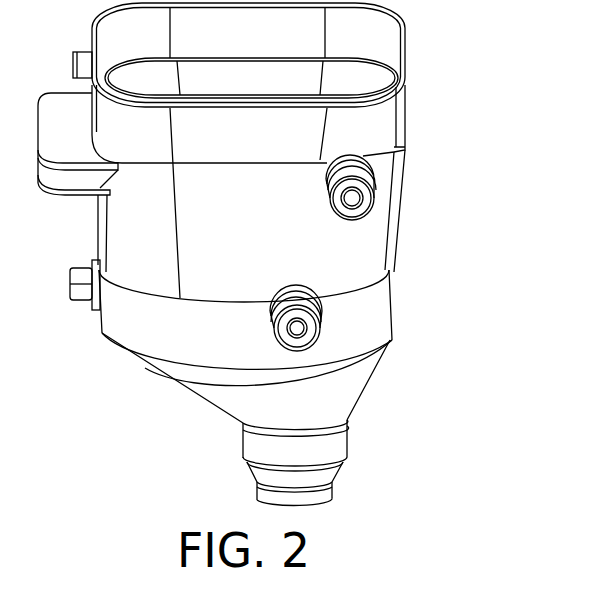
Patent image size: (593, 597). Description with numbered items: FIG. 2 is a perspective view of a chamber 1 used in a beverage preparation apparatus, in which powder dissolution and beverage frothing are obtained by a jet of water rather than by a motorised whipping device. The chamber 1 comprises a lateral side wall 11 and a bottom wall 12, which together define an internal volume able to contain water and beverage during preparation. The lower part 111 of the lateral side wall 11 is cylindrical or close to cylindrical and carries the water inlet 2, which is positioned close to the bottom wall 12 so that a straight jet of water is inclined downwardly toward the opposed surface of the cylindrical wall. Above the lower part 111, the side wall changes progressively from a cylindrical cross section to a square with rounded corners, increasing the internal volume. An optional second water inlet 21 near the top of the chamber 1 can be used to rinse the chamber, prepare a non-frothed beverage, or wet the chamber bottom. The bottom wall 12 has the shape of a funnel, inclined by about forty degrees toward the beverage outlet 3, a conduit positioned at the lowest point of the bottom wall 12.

The chamber 1 is at (296, 254).
The lateral side wall 11 is at (123, 238).
The lower part of the lateral side wall 111 is at (398, 267).
The bottom wall 12 is at (224, 400).
The water inlet 2 is at (308, 340).
The second water inlet 21 is at (370, 198).
The beverage outlet 3 is at (325, 455).